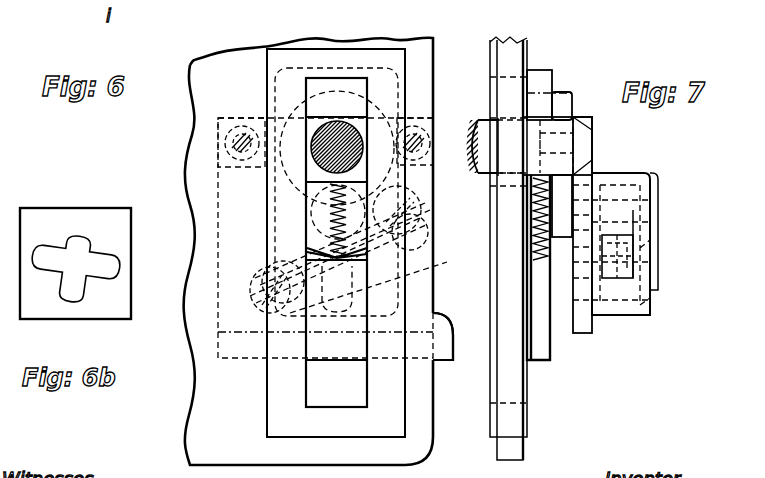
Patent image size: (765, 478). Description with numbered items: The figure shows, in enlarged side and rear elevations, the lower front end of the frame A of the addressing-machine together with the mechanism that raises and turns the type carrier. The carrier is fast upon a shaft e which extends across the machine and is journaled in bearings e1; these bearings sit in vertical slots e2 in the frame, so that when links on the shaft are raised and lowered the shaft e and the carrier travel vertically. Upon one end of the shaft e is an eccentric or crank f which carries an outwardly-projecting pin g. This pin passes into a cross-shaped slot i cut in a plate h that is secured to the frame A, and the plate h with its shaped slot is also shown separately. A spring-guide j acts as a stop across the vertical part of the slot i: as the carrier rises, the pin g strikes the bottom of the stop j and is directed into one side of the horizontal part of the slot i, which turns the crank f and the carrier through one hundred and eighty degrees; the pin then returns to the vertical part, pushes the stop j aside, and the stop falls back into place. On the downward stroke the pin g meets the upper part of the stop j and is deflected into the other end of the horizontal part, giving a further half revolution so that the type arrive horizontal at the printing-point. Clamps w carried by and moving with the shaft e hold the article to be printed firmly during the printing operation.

In FIG. 6, the frame A is at (222, 50).
In FIG. 7, the frame A is at (483, 474).
In FIG. 6, the shaft e is at (350, 134).
In FIG. 7, the shaft e is at (469, 121).
In FIG. 6, the bearings e1 is at (312, 138).
In FIG. 7, the bearings e1 is at (500, 178).
In FIG. 6, the vertical slots e2 is at (320, 392).
In FIG. 7, the vertical slots e2 is at (512, 388).
In FIG. 6, the eccentric or crank f is at (292, 192).
In FIG. 7, the eccentric or crank f is at (566, 92).
In FIG. 6, the pin g is at (278, 222).
In FIG. 7, the pin g is at (605, 205).
In FIG. 6, the plate h is at (118, 182).
In FIG. 6B, the plate h is at (105, 212).
In FIG. 7, the plate h is at (583, 335).
In FIG. 6, the +-shaped slot i is at (252, 256).
In FIG. 6B, the +-shaped slot i is at (66, 262).
In FIG. 7, the +-shaped slot i is at (586, 306).
In FIG. 6, the spring-guide j is at (420, 286).
In FIG. 7, the spring-guide j is at (615, 280).
In FIG. 6, the clamps w is at (447, 340).